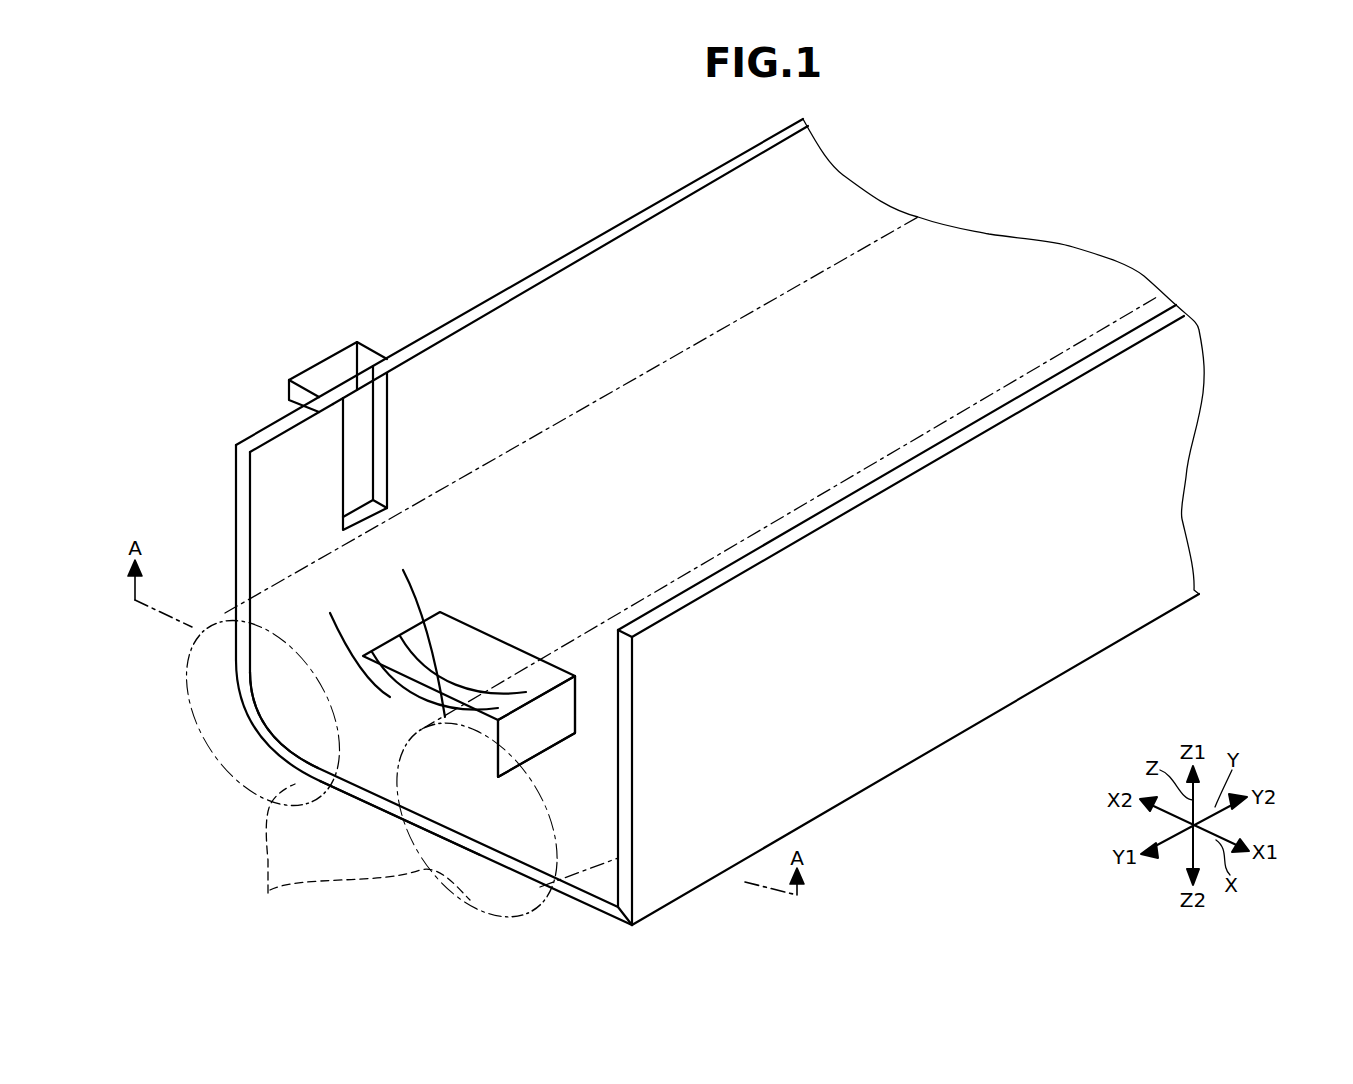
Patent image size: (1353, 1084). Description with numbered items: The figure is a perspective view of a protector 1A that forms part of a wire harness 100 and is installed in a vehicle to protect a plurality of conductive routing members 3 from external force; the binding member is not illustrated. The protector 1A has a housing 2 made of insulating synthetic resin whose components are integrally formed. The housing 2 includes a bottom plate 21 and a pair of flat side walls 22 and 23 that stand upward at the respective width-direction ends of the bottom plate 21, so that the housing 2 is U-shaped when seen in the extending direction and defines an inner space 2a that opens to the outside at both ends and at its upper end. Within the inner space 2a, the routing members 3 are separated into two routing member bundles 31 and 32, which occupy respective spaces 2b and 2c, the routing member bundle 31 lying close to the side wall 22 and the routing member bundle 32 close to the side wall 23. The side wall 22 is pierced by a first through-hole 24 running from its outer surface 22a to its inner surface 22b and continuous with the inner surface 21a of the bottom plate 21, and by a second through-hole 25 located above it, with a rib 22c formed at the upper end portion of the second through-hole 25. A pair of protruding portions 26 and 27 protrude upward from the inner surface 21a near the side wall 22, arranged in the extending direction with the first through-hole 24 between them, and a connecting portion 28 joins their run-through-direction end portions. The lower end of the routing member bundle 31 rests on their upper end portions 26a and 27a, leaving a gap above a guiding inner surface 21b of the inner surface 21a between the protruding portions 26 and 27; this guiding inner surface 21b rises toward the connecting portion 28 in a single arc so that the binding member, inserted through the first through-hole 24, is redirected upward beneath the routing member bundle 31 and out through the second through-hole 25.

The wire harness 100 is at (437, 222).
The protector 1A is at (410, 275).
The housing 2 is at (621, 224).
The inner space 2a is at (727, 197).
The space 2b is at (263, 527).
The space 2c is at (590, 753).
The bottom plate 21 is at (577, 893).
The inner surface 21a is at (387, 788).
The guiding inner surface 21b is at (432, 683).
The side wall 22 is at (235, 468).
The outer surface 22a is at (273, 422).
The inner surface 22b is at (543, 302).
The rib 22c is at (330, 367).
The side wall 23 is at (625, 837).
The first through-hole 24 is at (395, 700).
The second through-hole 25 is at (363, 410).
The protruding portion 26 is at (307, 753).
The upper end portion 26a is at (420, 702).
The protruding portion 27 is at (490, 673).
The upper end portion 27a is at (467, 670).
The connecting portion 28 is at (538, 730).
The routing members 3 is at (272, 885).
The routing member bundle 31 is at (231, 618).
The routing member bundle 32 is at (457, 895).